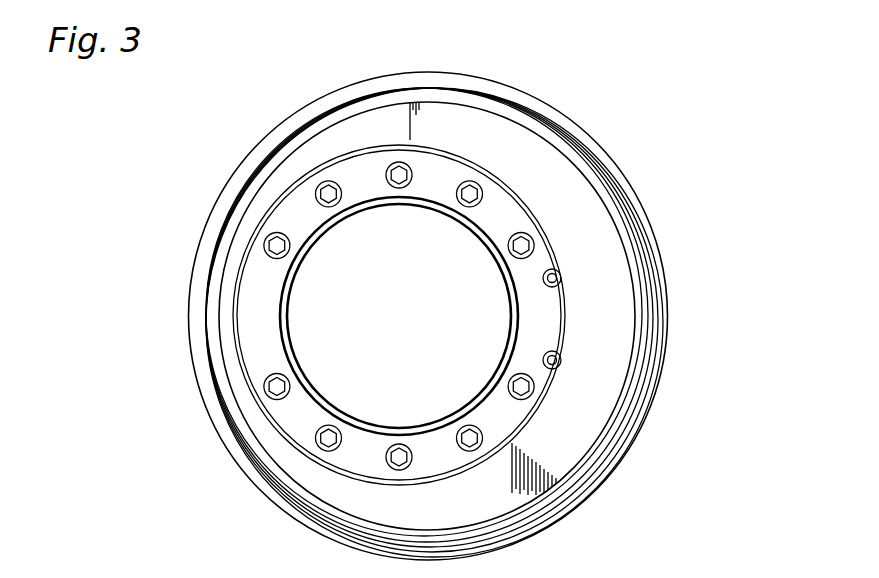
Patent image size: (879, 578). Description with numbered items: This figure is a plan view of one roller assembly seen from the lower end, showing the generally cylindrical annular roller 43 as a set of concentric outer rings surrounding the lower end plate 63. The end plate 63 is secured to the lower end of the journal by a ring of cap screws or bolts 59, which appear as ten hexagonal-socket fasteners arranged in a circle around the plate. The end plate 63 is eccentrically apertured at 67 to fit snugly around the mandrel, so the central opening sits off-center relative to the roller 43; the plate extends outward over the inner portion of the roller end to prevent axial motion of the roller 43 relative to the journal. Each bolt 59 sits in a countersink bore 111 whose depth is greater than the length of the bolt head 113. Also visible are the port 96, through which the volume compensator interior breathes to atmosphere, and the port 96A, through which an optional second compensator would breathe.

The roller 43 is at (665, 272).
The lower end plate 63 is at (622, 312).
The eccentric aperture 67 is at (480, 228).
The bolts or cap screws 59 is at (472, 189).
The bolt head 113 is at (522, 237).
The countersink bore 111 is at (530, 242).
The port 96 is at (561, 277).
The port 96A is at (562, 361).